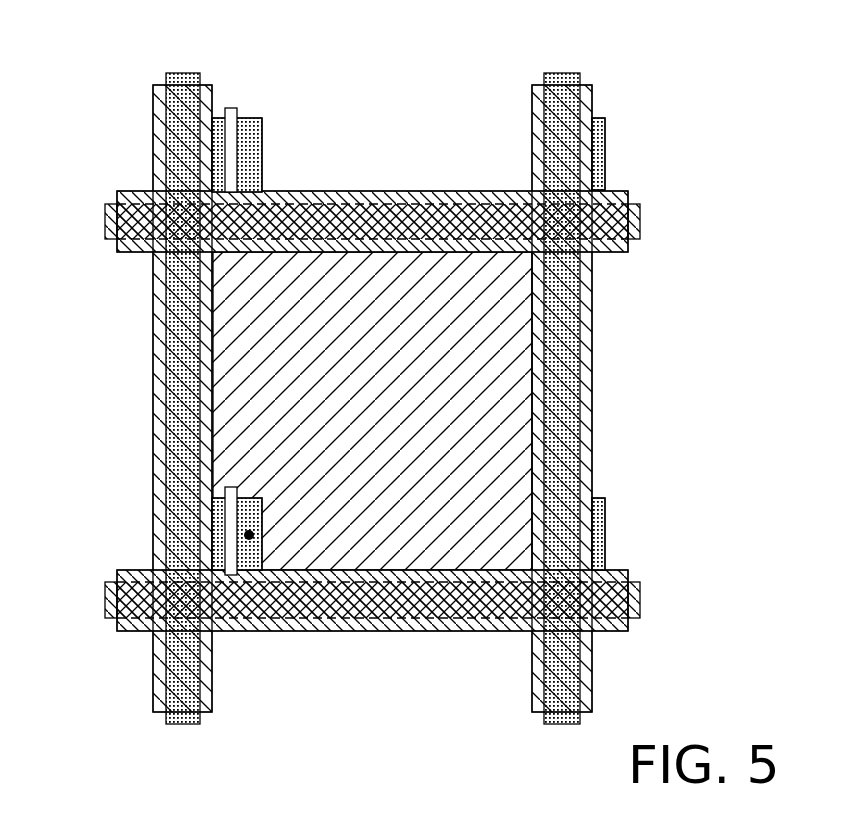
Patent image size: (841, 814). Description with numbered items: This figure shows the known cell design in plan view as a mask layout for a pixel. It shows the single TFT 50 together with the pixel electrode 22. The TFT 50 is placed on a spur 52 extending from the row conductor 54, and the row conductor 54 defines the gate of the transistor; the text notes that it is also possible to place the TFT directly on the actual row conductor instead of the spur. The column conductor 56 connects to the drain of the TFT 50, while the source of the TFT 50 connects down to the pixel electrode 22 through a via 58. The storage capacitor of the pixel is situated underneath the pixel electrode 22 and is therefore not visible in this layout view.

The pixel electrode 22 is at (382, 353).
The single TFT 50 is at (198, 538).
The spur 52 is at (233, 487).
The row conductor 54 is at (105, 220).
The column conductor 56 is at (372, 398).
The via 58 is at (255, 535).